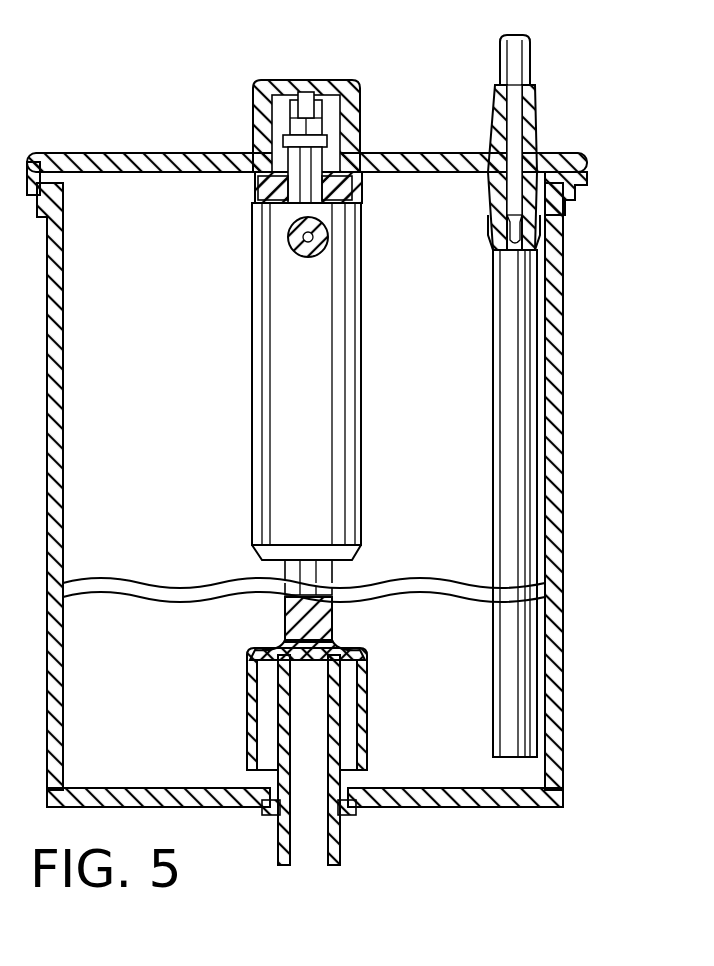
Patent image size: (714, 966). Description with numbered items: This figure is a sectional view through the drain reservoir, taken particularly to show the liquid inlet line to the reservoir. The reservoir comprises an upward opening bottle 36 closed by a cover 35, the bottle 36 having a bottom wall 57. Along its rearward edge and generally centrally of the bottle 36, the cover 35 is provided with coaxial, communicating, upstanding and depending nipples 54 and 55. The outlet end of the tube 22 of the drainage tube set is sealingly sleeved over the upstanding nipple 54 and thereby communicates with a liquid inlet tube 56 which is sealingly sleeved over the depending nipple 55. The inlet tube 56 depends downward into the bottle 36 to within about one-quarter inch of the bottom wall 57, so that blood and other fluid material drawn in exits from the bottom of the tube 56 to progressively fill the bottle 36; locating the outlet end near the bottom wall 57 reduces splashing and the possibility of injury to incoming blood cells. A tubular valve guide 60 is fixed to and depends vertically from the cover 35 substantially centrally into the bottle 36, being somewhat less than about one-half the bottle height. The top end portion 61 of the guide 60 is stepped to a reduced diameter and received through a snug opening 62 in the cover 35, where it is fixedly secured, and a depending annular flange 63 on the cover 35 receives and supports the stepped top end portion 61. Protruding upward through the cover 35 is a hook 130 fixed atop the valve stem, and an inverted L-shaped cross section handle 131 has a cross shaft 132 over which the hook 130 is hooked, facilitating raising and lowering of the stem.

The tube 22 is at (532, 55).
The cover 35 is at (570, 165).
The bottle 36 is at (557, 448).
The upstanding nipple 54 is at (535, 105).
The depending nipple 55 is at (545, 222).
The liquid inlet tube 56 is at (520, 305).
The bottom wall 57 is at (450, 797).
The tubular valve guide 60 is at (278, 505).
The top end portion 61 is at (265, 183).
The opening 62 is at (283, 140).
The depending annular flange 63 is at (258, 196).
The hook 130 is at (318, 122).
The handle 131 is at (368, 98).
The cross shaft 132 is at (305, 92).